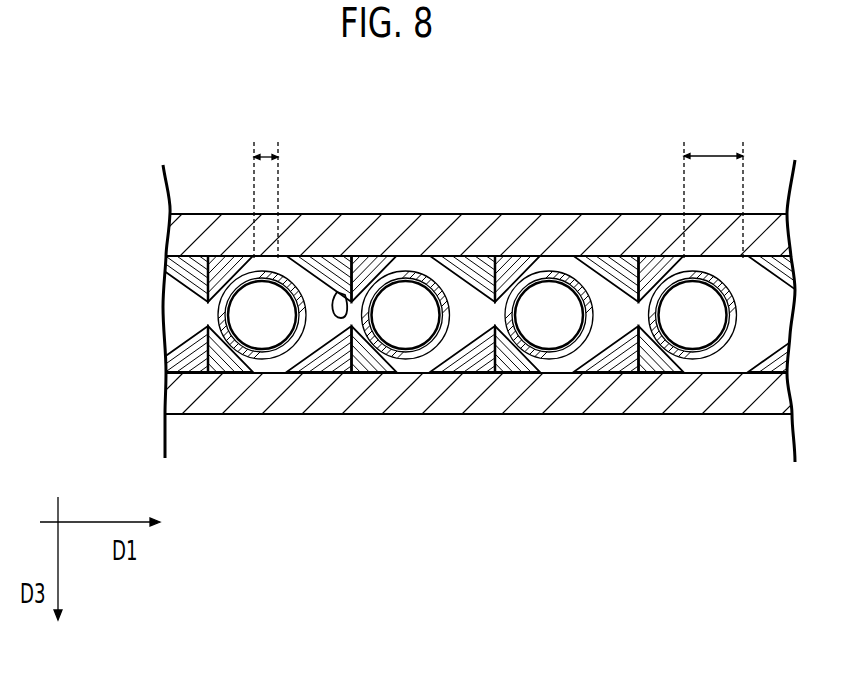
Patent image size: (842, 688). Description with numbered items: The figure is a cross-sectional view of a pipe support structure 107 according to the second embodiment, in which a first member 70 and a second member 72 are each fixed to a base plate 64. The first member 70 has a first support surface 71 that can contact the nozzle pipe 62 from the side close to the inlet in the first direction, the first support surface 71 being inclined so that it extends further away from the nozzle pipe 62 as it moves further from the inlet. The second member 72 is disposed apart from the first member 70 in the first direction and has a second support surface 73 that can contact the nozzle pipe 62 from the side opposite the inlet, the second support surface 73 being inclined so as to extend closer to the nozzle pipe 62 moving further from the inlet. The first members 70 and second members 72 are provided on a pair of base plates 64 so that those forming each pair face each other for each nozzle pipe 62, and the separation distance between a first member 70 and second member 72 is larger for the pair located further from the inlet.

The support structure 107 is at (113, 113).
The base plate 64 is at (443, 214).
The first member 70 is at (210, 258).
The second member 72 is at (325, 258).
The second support surface 73 is at (347, 290).
The nozzle pipe 62 is at (222, 308).
The first support surface 71 is at (266, 282).